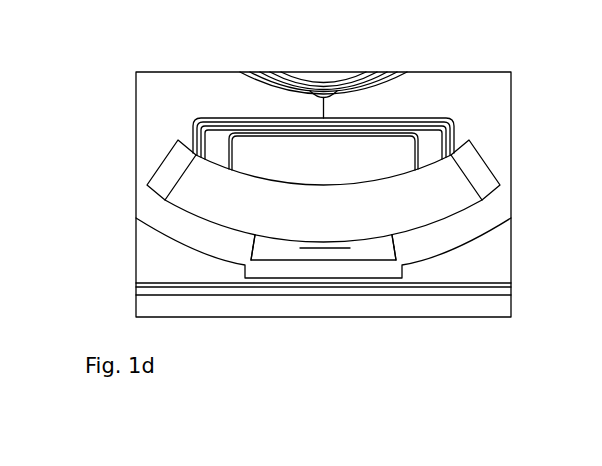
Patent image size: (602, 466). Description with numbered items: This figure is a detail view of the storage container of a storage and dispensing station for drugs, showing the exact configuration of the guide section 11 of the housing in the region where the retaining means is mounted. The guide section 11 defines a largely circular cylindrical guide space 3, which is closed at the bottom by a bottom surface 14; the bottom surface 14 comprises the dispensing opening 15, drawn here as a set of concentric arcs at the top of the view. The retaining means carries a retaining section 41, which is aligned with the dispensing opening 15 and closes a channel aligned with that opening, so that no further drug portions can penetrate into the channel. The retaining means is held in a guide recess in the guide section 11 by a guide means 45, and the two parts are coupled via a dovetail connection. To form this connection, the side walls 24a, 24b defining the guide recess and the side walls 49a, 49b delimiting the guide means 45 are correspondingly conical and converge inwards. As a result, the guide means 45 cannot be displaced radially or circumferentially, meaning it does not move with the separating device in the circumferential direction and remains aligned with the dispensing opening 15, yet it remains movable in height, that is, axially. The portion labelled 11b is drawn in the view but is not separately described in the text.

The guide space 3 is at (147, 184).
The guide section 11 is at (188, 227).
The base panel 11b is at (323, 268).
The bottom surface 14 is at (472, 107).
The dispensing opening 15 is at (256, 158).
The side wall 24a is at (394, 238).
The side wall 24b is at (253, 238).
The retaining section 41 is at (203, 188).
The guide means 45 is at (335, 250).
The side wall 49a is at (393, 250).
The side wall 49b is at (254, 250).